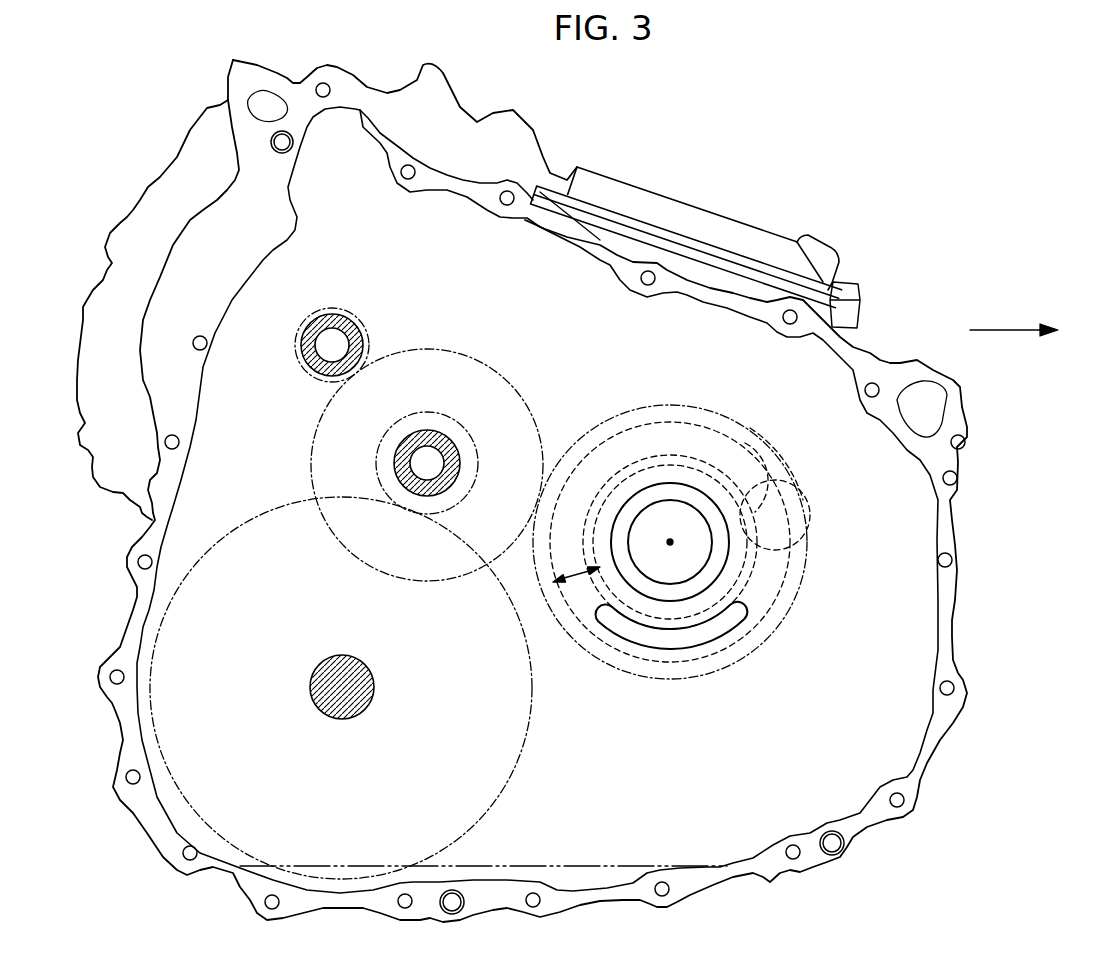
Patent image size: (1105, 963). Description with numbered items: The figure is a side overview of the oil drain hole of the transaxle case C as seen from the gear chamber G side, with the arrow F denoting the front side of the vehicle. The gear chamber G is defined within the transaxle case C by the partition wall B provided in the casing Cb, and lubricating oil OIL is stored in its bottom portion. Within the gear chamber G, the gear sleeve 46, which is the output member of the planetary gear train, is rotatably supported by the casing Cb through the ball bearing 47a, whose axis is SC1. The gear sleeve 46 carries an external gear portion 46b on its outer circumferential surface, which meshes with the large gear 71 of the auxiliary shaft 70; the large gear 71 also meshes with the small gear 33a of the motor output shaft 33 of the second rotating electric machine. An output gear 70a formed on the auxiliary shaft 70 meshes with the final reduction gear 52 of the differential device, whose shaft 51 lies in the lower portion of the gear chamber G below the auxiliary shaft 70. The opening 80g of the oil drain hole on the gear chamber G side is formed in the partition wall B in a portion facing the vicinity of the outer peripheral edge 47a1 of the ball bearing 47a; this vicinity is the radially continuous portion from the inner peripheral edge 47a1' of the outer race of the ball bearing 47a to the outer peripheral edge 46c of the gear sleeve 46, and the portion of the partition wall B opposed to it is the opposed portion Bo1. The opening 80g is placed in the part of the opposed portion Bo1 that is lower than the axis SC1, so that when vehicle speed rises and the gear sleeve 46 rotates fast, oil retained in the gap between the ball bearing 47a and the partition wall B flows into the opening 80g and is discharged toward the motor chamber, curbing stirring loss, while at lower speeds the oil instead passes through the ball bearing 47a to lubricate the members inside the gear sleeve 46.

The motor output shaft 33 is at (360, 336).
The small gear 33a is at (327, 310).
The auxiliary shaft 70 is at (403, 430).
The output gear 70a is at (377, 463).
The large gear 71 is at (478, 352).
The gear sleeve 46 is at (704, 438).
The external gear portion 46b is at (615, 408).
The outer peripheral edge of the gear sleeve 46c is at (750, 428).
The ball bearing 47a is at (727, 582).
The outer peripheral edge of the ball bearing 47a1 is at (811, 498).
The inner peripheral edge of the outer race 47a1' is at (798, 462).
The axis of the ball bearing SC1 is at (670, 542).
The opposed portion Bo1 is at (580, 585).
The opening of the oil drain hole 80g is at (660, 650).
The output shaft 51 is at (363, 672).
The final reduction gear 52 is at (527, 728).
The transaxle case C is at (907, 203).
The casing CB is at (877, 370).
The arrow F is at (1026, 332).
The gear chamber G is at (878, 703).
The partition wall B is at (743, 767).
The stored lubricating oil level OIL is at (587, 877).